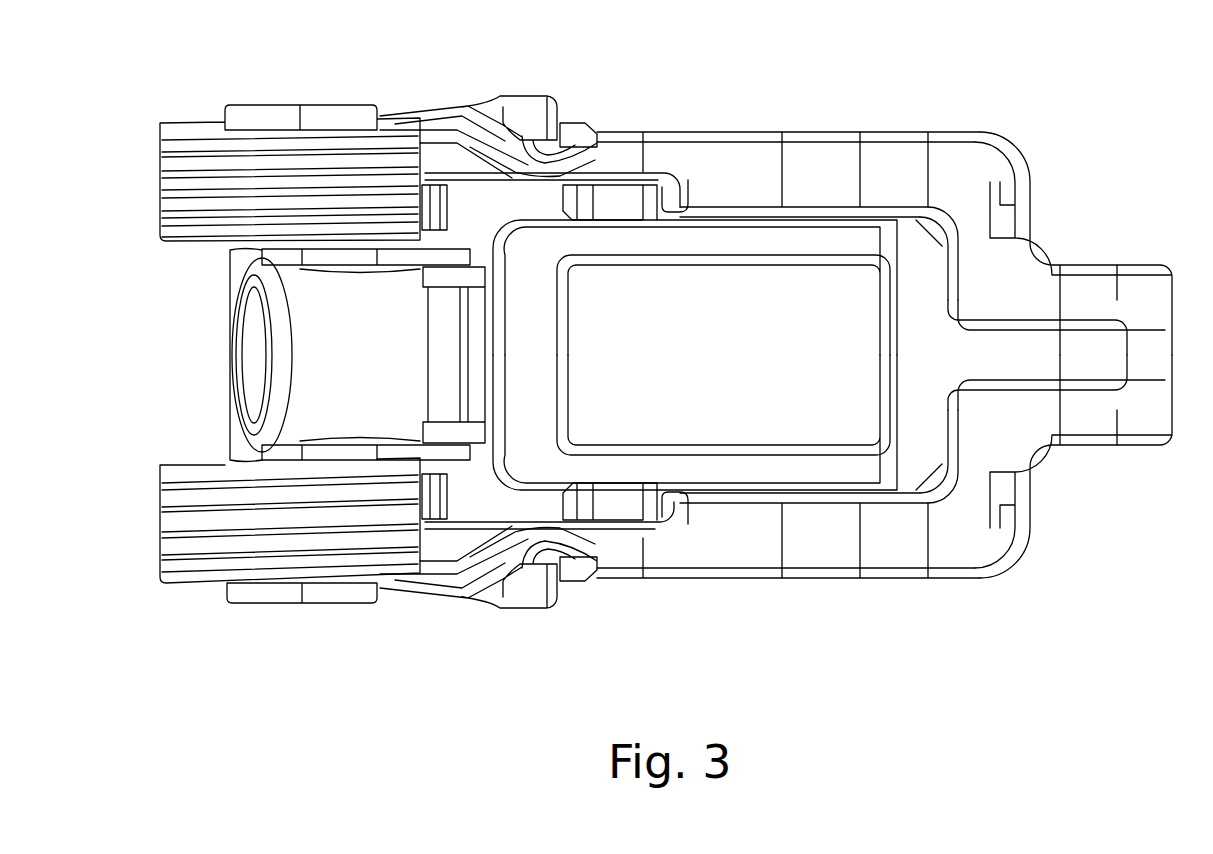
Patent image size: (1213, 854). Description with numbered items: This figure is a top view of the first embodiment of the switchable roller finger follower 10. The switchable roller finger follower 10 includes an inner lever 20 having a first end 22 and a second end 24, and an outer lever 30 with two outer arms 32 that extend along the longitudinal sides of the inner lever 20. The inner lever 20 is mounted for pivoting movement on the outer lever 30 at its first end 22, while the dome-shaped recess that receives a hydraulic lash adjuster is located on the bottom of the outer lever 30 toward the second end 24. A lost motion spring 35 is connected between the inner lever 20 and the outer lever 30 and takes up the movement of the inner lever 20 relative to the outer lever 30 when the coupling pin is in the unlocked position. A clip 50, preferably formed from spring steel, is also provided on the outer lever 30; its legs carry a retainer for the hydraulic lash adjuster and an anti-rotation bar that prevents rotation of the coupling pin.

The switchable roller finger follower 10 is at (862, 112).
The inner lever 20 is at (757, 240).
The first end 22 is at (1083, 347).
The second end 24 is at (530, 310).
The outer lever 30 is at (913, 163).
The outer arms 32 is at (710, 170).
The lost motion spring 35 is at (378, 175).
The clip 50 is at (445, 330).